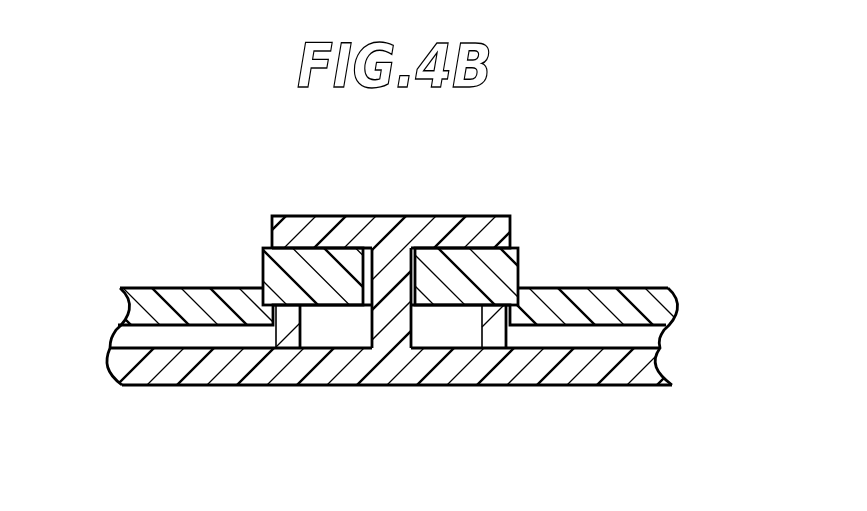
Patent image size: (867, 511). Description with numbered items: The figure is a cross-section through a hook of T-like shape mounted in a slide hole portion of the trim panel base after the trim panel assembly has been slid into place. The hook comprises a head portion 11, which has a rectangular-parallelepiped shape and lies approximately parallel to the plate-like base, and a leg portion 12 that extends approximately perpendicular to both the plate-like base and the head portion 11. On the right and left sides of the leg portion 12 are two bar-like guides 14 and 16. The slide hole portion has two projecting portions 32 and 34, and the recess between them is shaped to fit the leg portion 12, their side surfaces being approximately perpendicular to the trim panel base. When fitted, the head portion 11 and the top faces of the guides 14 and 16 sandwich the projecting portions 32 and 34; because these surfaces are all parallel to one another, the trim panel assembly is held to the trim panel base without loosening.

The head portion 11 is at (450, 226).
The leg portion 12 is at (383, 285).
The bar-like guide 14 is at (500, 330).
The bar-like guide 16 is at (297, 322).
The projecting portion 32 is at (500, 275).
The projecting portion 34 is at (298, 250).